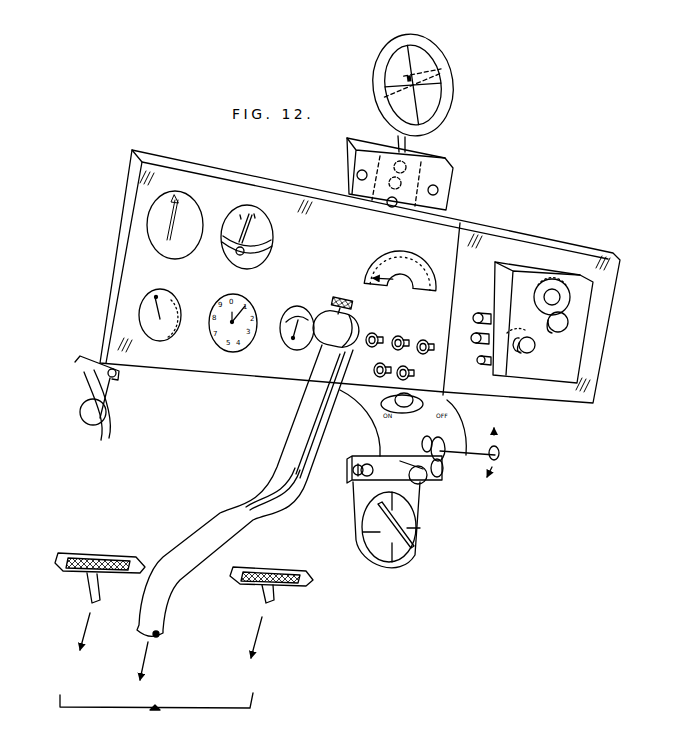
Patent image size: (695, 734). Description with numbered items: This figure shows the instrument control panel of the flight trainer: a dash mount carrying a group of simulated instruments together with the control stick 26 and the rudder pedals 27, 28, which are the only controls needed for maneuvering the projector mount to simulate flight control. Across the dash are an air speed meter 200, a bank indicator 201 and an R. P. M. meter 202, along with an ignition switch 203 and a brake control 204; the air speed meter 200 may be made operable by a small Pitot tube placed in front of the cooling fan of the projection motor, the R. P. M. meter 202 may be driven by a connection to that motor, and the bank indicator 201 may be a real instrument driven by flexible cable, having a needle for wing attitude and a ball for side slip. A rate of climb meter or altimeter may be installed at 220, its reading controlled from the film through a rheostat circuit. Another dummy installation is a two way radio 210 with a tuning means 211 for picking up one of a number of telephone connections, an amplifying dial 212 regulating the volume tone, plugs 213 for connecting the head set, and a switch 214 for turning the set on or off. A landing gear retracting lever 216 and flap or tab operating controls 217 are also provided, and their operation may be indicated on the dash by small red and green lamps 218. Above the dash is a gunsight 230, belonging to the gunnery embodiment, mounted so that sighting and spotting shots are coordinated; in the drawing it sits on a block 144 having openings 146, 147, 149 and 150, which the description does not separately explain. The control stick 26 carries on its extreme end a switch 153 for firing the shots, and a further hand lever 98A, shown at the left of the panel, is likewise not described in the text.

The control stick 26 is at (305, 408).
The right pedal 27 is at (292, 560).
The left pedal 28 is at (110, 553).
The hand lever 98A is at (87, 411).
The steering column block 144 is at (404, 181).
The mounting hole 146 is at (398, 202).
The mounting hole 147 is at (405, 160).
The mounting hole 149 is at (440, 190).
The mounting hole 150 is at (356, 175).
The switch 153 is at (340, 300).
The air speed meter 200 is at (184, 188).
The bank indicator 201 is at (253, 198).
The R. P. M. meter 202 is at (387, 243).
The ignition switch 203 is at (470, 405).
The brake control 204 is at (503, 453).
The two way radio 210 is at (581, 318).
The tuning means 211 is at (548, 279).
The amplifying dial 212 is at (527, 353).
The plugs 213 is at (497, 340).
The switch 214 is at (483, 370).
The landing gear retracting lever 216 is at (428, 483).
The flap or tab operating controls 217 is at (302, 308).
The small red and green lamps 218 is at (408, 332).
The rate of climb meter or altimeter 220 is at (162, 286).
The gunsight 230 is at (393, 55).